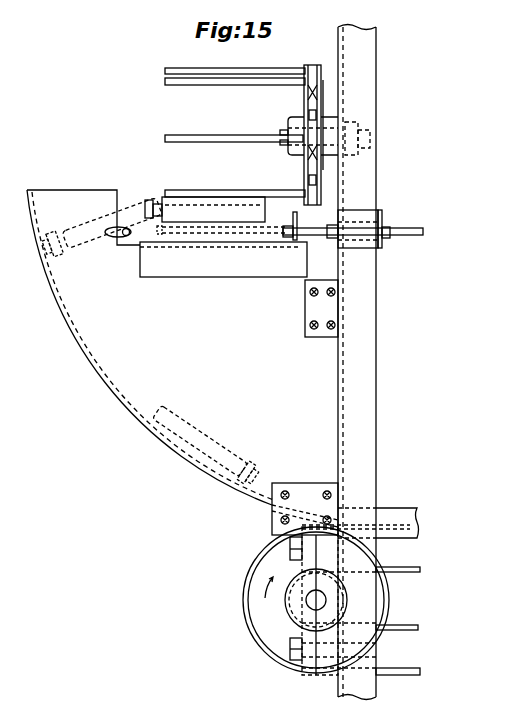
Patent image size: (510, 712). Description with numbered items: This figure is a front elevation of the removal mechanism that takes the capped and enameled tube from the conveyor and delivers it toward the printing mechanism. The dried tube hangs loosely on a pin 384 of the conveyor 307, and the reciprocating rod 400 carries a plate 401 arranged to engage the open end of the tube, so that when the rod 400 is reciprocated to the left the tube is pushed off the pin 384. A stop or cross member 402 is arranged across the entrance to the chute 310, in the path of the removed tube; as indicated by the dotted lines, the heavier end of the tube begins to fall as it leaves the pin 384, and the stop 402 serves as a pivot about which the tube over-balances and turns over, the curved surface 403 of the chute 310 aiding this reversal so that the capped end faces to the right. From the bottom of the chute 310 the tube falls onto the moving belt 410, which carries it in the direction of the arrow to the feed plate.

The conveyor 307 is at (310, 63).
The pin 384 is at (205, 134).
The reciprocating rod 400 is at (405, 227).
The plate 401 is at (297, 222).
The stop 402 is at (117, 240).
The chute 310 is at (167, 347).
The curved surface 403 is at (92, 366).
The belt 410 is at (421, 525).